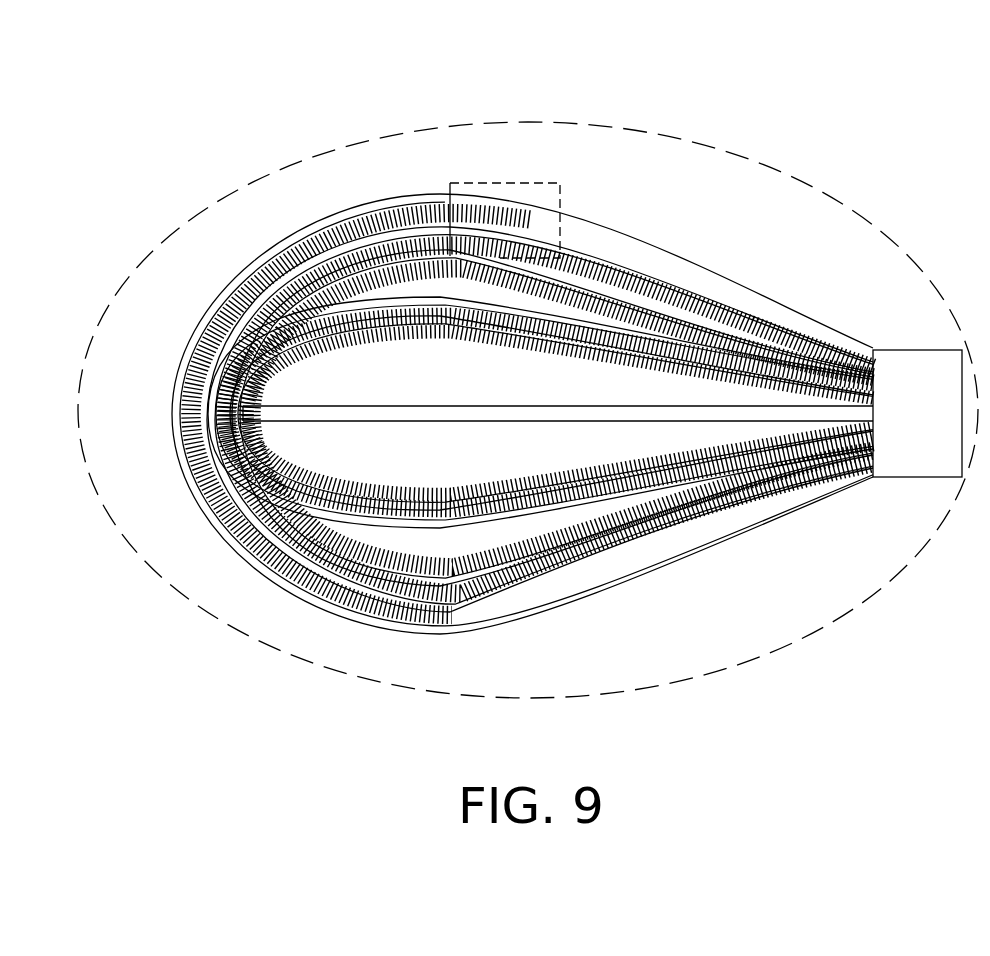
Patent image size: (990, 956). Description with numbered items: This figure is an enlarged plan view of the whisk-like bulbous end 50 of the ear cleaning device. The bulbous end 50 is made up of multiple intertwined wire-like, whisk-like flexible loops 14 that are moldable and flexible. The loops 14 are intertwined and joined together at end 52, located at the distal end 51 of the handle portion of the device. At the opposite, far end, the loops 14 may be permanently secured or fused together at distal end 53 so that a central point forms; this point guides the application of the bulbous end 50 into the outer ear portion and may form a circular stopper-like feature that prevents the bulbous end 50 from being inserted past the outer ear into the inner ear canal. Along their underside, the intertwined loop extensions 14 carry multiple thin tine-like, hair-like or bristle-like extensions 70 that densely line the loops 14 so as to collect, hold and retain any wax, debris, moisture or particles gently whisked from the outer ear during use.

The whisk-like flexible loops 14 is at (294, 250).
The whisk-like bulbous end 50 is at (821, 161).
The distal end of the handle portion 51 is at (920, 478).
The end at which the loops are joined 52 is at (878, 480).
The distal end of the loops 53 is at (188, 405).
The bristle-like extensions 70 is at (503, 183).